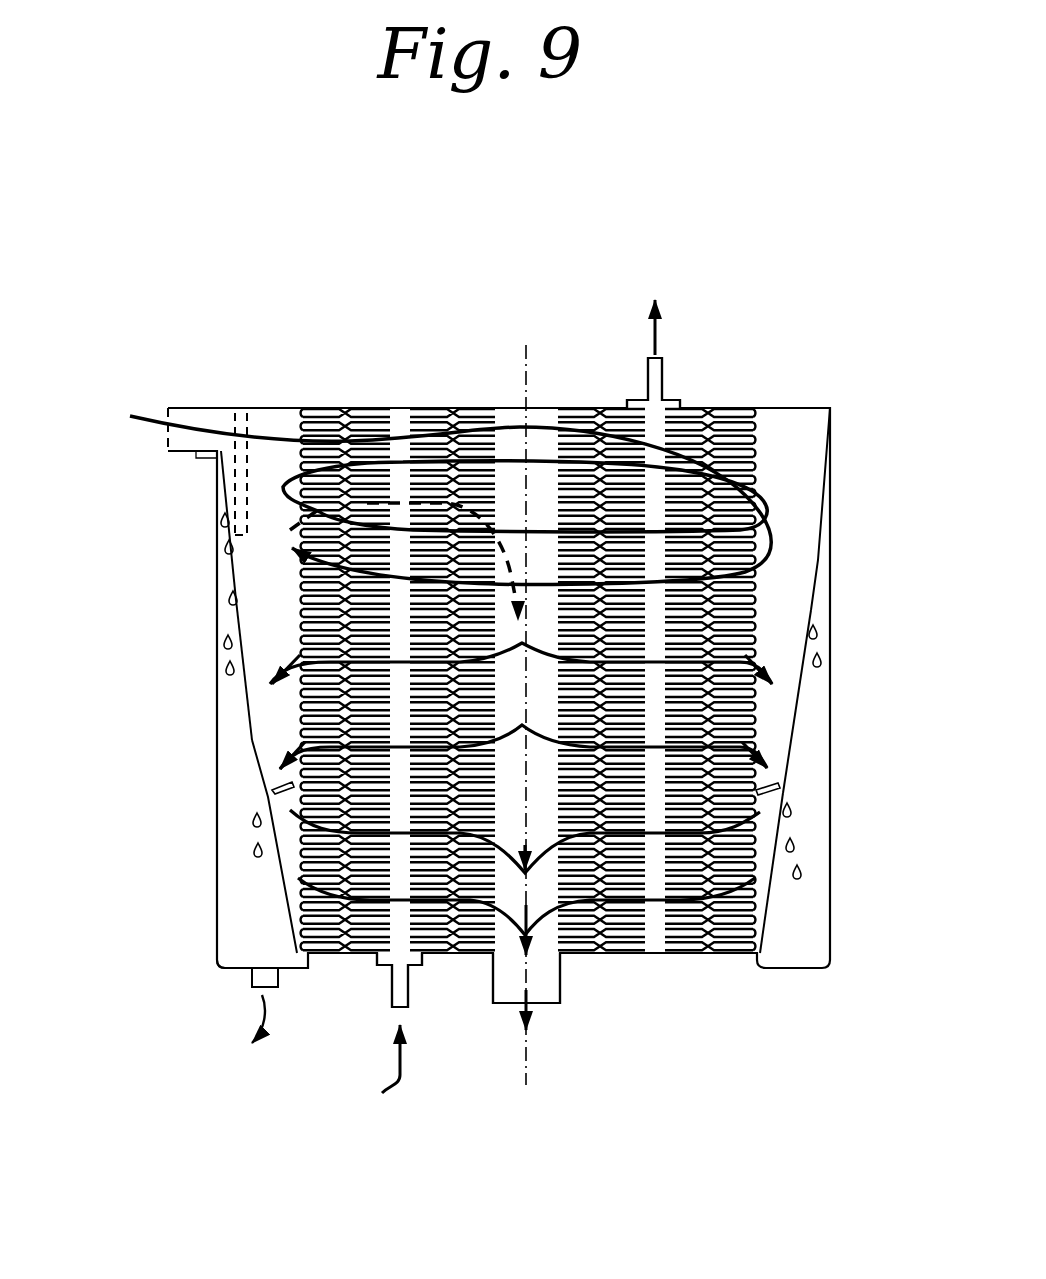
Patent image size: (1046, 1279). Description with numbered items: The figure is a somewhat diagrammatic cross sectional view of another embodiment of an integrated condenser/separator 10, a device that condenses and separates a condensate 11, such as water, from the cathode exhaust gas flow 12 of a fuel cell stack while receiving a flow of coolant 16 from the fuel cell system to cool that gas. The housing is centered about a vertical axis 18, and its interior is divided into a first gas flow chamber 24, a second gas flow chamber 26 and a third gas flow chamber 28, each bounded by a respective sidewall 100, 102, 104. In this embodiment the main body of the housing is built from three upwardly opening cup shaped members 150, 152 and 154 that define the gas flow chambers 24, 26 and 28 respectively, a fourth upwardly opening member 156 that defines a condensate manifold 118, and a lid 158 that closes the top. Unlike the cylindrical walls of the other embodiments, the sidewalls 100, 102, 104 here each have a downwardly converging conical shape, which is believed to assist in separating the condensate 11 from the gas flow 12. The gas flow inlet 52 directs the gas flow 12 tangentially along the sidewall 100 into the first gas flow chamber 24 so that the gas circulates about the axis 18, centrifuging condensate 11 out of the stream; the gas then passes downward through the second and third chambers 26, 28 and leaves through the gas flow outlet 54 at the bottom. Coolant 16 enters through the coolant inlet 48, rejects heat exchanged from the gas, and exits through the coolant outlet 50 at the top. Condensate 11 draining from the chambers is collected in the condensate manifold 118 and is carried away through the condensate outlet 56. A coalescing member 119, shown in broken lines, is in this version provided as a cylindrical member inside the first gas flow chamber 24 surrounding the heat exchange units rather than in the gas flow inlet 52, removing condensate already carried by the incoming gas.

The integrated condenser/separator 10 is at (395, 248).
The condensate 11 is at (218, 665).
The cathode exhaust gas flow 12 is at (147, 410).
The coolant 16 is at (700, 330).
The vertical axis 18 is at (530, 355).
The first gas flow chamber 24 is at (770, 485).
The second gas flow chamber 26 is at (780, 625).
The third gas flow chamber 28 is at (765, 820).
The coolant inlet 48 is at (392, 988).
The coolant outlet 50 is at (662, 373).
The gas flow inlet 52 is at (193, 455).
The gas flow outlet 54 is at (560, 990).
The condensate outlet 56 is at (262, 980).
The sidewall of first gas flow chamber 100 is at (225, 585).
The sidewall of second gas flow chamber 102 is at (258, 712).
The sidewall of third gas flow chamber 104 is at (290, 887).
The condensate manifold 118 is at (215, 728).
The coalescing member 119 is at (250, 410).
The first upwardly opening cup shaped member 150 is at (808, 613).
The second upwardly opening cup shaped member 152 is at (798, 697).
The third upwardly opening cup shaped member 154 is at (772, 893).
The fourth upwardly opening member 156 is at (217, 930).
The lid 158 is at (778, 405).